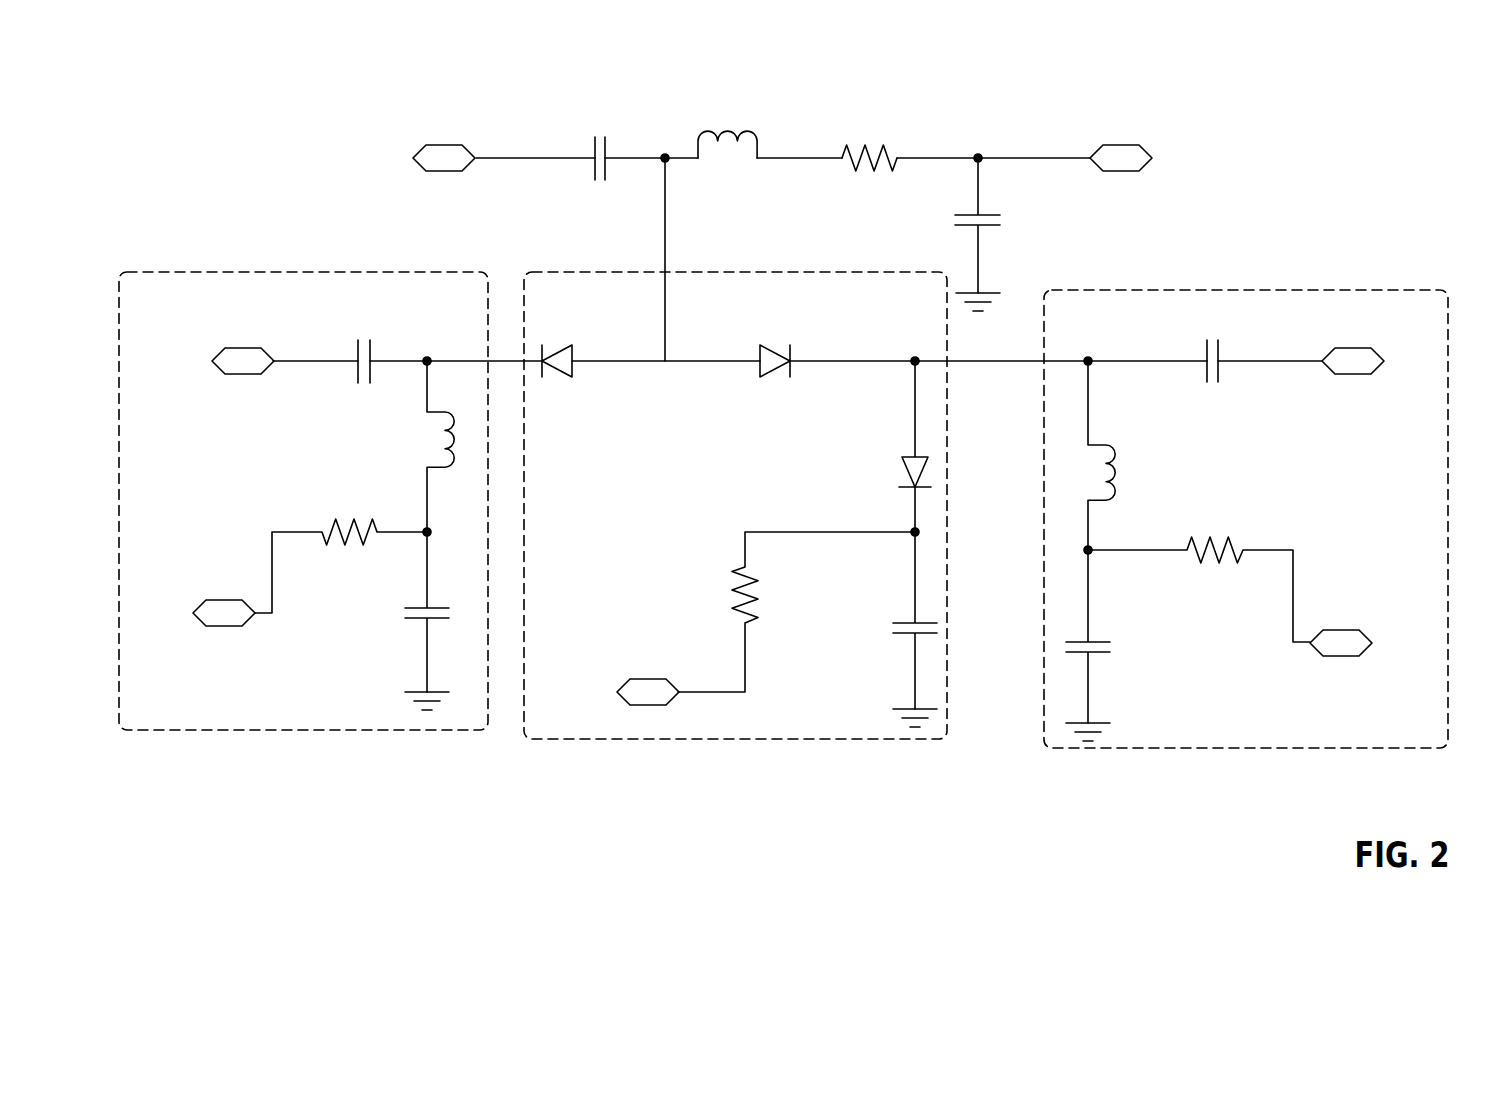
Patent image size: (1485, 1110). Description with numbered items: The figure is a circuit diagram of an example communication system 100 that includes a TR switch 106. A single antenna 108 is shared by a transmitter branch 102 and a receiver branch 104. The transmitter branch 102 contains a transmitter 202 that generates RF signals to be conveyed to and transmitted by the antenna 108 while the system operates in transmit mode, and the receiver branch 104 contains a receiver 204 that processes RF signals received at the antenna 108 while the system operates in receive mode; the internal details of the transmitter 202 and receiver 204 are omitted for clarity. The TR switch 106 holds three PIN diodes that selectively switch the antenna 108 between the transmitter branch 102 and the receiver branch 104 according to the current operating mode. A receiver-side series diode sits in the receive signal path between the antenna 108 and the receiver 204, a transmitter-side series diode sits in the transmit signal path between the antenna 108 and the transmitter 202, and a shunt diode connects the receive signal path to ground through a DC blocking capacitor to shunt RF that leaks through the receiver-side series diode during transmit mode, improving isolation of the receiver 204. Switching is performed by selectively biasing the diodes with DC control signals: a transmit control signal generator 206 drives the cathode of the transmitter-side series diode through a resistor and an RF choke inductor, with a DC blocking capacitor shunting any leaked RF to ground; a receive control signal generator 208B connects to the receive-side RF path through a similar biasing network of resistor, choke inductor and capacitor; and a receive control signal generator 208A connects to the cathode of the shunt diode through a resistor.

The communication system 100 is at (225, 102).
The transmitter branch 102 is at (218, 272).
The receiver branch 104 is at (1352, 290).
The TR switch 106 is at (596, 272).
The antenna 108 is at (428, 172).
The transmitter 202 is at (245, 375).
The receiver 204 is at (1352, 375).
The transmit control signal generator 206 is at (224, 627).
The receive control signal generator 208A is at (648, 705).
The receive control signal generator 208B is at (1340, 657).